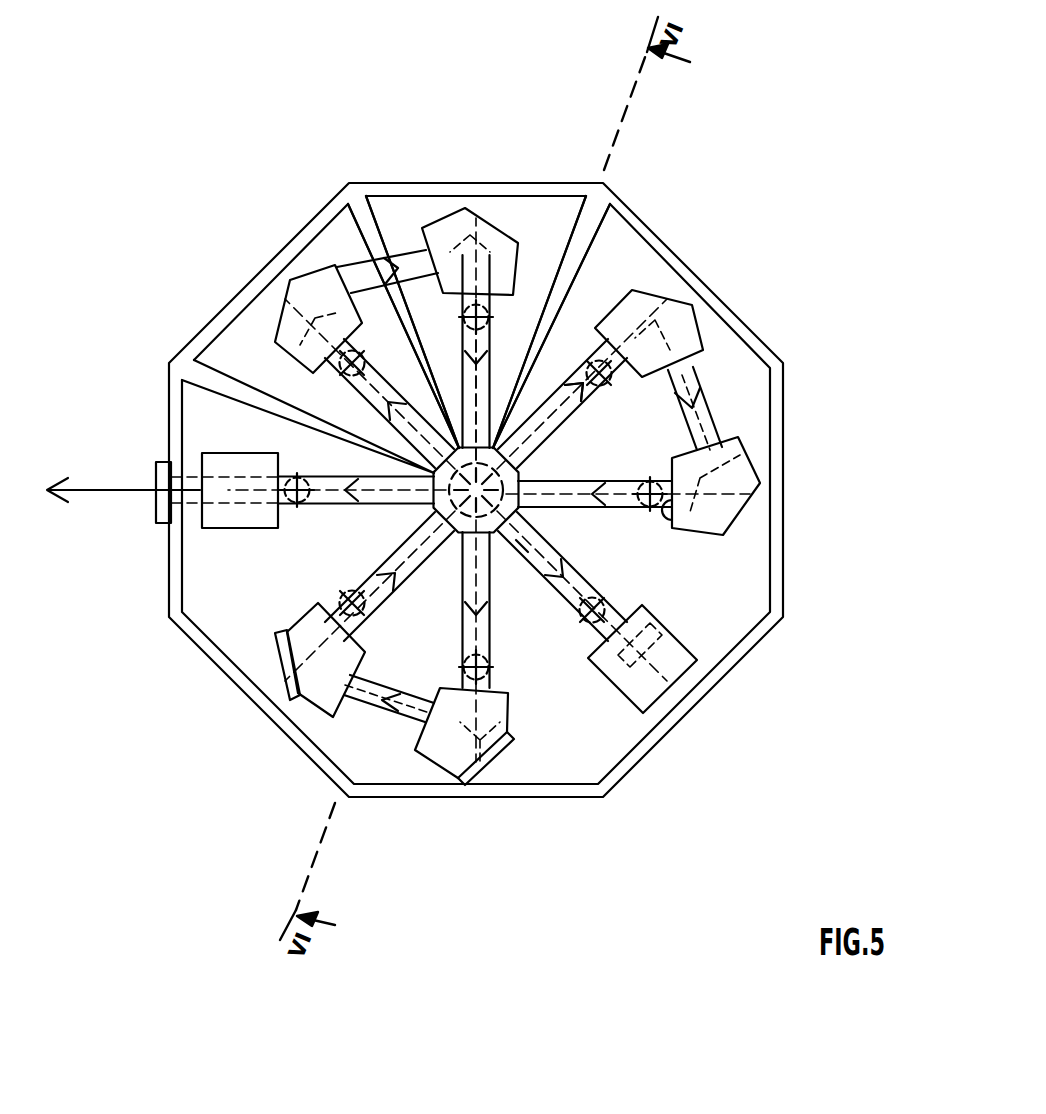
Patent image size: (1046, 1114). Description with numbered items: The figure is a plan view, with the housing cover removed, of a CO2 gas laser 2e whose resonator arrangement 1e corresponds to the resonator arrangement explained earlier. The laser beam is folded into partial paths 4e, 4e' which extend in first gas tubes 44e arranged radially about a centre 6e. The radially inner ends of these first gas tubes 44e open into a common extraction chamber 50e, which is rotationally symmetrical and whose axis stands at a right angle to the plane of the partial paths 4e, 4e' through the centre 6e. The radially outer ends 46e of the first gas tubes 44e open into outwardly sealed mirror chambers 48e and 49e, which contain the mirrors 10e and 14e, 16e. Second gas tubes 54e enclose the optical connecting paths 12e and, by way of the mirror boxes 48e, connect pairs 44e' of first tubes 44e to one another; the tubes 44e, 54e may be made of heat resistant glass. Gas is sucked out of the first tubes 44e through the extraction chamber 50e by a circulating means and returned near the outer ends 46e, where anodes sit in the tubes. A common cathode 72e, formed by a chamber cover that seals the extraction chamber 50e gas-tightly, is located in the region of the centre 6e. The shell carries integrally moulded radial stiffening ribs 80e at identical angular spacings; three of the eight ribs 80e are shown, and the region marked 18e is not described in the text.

The resonator arrangement 1e is at (741, 388).
The CO2 gas laser 2e is at (213, 702).
The partial path 4e is at (475, 471).
The partial path 4e' is at (473, 492).
The centre 6e is at (424, 518).
The mirror 10e is at (762, 493).
The optical connecting path 12e is at (418, 245).
The mirror 14e is at (218, 497).
The mirror 16e is at (652, 678).
The partition wall 18e is at (395, 262).
The first gas tube 44e is at (489, 490).
The pair of first tubes 44e' is at (609, 406).
The radially outer end 46e is at (683, 526).
The mirror chamber 48e is at (735, 512).
The mirror chamber 49e is at (220, 530).
The extraction chamber 50e is at (519, 474).
The second gas tube 54e is at (430, 262).
The common cathode 72e is at (466, 402).
The radial stiffening rib 80e is at (370, 226).